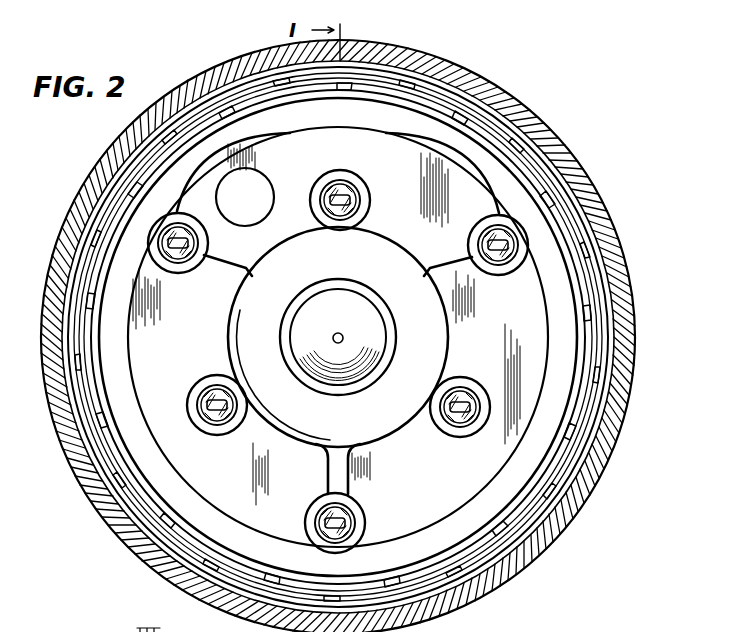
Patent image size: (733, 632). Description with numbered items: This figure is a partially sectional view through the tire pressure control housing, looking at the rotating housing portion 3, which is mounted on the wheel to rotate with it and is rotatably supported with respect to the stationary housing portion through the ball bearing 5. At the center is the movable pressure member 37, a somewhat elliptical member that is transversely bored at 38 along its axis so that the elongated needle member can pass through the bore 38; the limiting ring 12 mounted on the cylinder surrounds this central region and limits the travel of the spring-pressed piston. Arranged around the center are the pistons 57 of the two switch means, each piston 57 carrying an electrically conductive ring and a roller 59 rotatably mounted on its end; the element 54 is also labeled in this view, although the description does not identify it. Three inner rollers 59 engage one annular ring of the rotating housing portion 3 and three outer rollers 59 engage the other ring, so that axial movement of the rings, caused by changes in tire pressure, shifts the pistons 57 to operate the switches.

The housing portion 3 is at (593, 205).
The ball bearing 5 is at (96, 478).
The limiting ring 12 is at (400, 261).
The movable pressure member 37 is at (388, 353).
The bore 38 is at (337, 333).
The wheel disc plate 54 is at (524, 424).
The piston 57 is at (335, 192).
The roller 59 is at (367, 198).